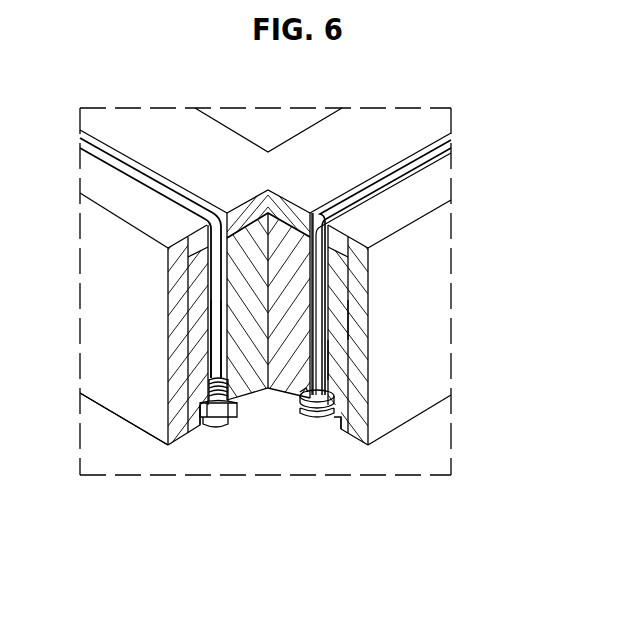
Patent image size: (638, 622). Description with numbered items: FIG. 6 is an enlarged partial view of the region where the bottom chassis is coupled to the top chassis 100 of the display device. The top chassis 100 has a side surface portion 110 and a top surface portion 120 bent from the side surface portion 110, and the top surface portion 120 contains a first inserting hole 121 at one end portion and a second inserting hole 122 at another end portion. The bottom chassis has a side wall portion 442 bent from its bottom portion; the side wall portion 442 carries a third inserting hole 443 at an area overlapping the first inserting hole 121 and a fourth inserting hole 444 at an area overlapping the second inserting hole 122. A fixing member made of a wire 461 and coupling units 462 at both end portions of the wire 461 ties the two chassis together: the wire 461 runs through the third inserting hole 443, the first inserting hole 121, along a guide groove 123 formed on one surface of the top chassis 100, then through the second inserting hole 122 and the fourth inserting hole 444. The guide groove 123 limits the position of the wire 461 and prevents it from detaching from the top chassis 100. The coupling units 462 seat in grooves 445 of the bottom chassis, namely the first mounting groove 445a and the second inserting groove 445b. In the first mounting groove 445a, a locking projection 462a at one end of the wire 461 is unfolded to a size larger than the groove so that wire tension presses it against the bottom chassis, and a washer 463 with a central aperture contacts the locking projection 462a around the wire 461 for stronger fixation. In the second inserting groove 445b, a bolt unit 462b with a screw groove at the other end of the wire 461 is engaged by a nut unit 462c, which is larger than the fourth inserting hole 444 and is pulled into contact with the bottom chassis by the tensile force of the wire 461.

The top chassis 100 is at (318, 337).
The side surface portion 110 is at (295, 350).
The top surface portion 120 is at (436, 185).
The first inserting hole 121 is at (315, 223).
The second inserting hole 122 is at (223, 223).
The guide groove 123 is at (388, 170).
The side wall portion 442 is at (333, 327).
The third inserting hole 443 is at (322, 350).
The fourth inserting hole 444 is at (210, 340).
The fixing member 445 is at (269, 490).
The first mounting groove 445a is at (335, 413).
The second inserting groove 445b is at (205, 426).
The wire 461 is at (420, 162).
The coupling unit 462 is at (374, 503).
The locking projection 462a is at (302, 415).
The bolt unit 462b is at (240, 417).
The nut unit 462c is at (212, 428).
The washer 463 is at (318, 414).